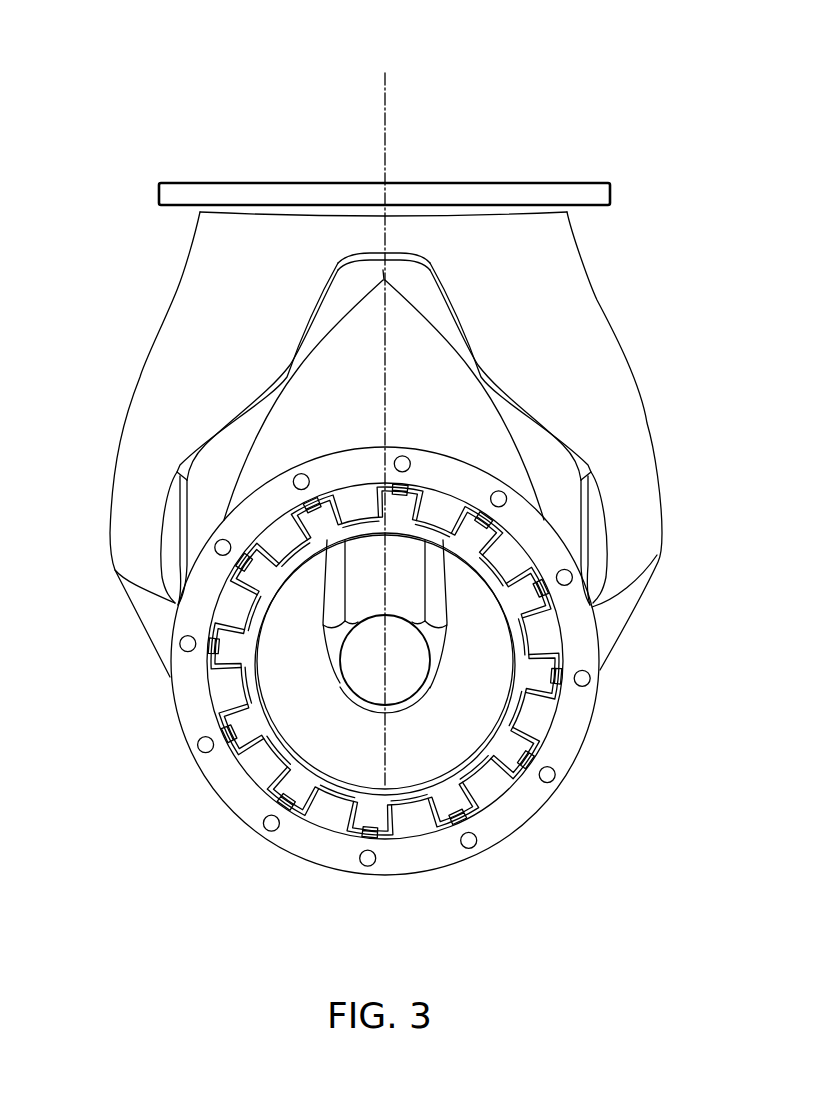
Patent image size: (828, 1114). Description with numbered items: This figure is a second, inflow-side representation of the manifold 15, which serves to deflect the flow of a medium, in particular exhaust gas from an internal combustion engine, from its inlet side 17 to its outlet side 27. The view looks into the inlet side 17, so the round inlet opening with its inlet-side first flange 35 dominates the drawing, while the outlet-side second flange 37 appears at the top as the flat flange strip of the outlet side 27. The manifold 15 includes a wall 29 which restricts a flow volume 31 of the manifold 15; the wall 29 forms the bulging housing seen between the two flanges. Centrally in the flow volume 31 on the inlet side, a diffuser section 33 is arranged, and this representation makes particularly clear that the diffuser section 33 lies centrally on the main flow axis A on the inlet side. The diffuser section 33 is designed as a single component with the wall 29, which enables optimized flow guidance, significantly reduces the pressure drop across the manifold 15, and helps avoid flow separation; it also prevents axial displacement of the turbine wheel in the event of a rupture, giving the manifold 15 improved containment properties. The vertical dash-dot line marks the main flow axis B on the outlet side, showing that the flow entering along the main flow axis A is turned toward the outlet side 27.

The manifold 15 is at (535, 72).
The inlet side 17 is at (545, 807).
The outlet side 27 is at (515, 170).
The wall 29 is at (128, 390).
The flow volume 31 is at (480, 717).
The diffuser section 33 is at (350, 680).
The first flange 35 is at (575, 722).
The second flange 37 is at (583, 193).
The main flow axis on the inlet side A is at (383, 660).
The main flow axis on the outlet side B is at (385, 92).